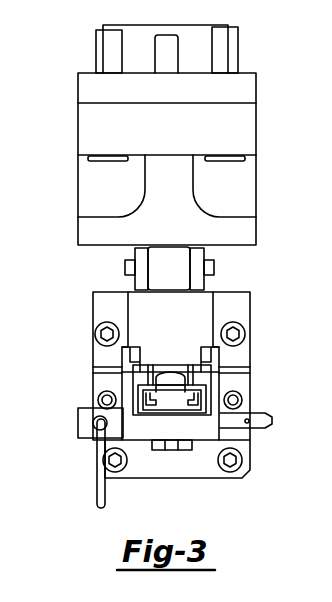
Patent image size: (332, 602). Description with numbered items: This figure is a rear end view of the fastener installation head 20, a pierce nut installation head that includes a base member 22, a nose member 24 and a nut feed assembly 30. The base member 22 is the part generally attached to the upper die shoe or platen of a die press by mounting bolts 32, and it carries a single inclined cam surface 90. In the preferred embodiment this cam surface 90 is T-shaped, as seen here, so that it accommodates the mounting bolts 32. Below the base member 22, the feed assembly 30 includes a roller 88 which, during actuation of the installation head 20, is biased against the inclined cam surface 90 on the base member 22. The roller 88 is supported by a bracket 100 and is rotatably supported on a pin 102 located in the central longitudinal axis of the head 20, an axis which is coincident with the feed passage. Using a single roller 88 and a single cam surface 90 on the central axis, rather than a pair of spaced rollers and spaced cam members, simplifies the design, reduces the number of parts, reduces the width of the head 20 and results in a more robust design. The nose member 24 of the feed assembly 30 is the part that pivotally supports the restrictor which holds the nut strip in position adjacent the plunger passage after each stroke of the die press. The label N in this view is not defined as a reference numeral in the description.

The motor/actuator assembly 20 is at (202, 134).
The housing body 22 is at (167, 159).
The terminal cap 32 is at (232, 53).
The lower housing portion 90 is at (180, 220).
The electrical connector 88 is at (168, 268).
The left connector tab 102 is at (125, 268).
The right connector tab 100 is at (205, 284).
The mounting bracket assembly 30 is at (166, 402).
The bracket housing 24 is at (93, 317).
The connector receptacle N is at (170, 402).